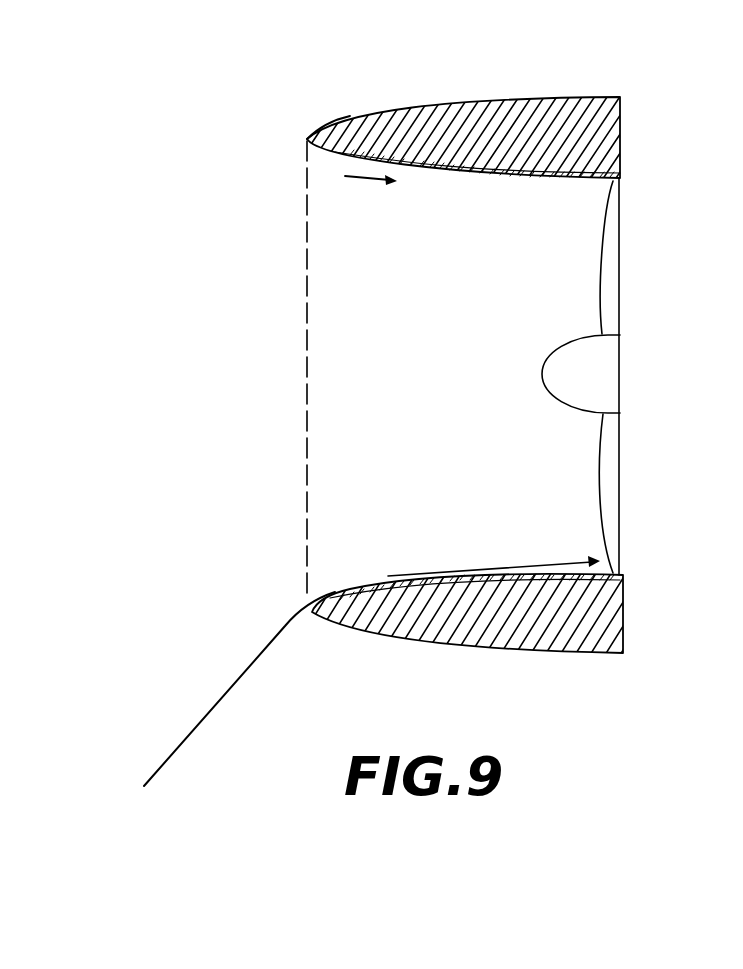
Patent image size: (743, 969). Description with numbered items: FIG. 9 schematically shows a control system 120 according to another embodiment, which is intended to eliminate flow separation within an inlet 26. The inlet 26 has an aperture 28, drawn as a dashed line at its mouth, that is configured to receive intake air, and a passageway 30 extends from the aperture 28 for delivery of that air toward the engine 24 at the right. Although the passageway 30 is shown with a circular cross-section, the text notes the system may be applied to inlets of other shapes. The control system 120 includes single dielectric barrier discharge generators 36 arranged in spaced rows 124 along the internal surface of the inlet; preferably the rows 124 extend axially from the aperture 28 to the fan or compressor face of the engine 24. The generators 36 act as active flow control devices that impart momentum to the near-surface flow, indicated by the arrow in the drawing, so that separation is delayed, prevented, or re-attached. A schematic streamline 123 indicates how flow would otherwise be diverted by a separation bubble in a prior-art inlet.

The control system 120 is at (276, 70).
The inlet 26 is at (547, 97).
The passageway 30 is at (425, 176).
The spaced rows 124 is at (530, 177).
The aperture 28 is at (307, 246).
The engine 24 is at (598, 277).
The single dielectric barrier discharge generators 36 is at (451, 562).
The schematic streamline 123 is at (268, 640).